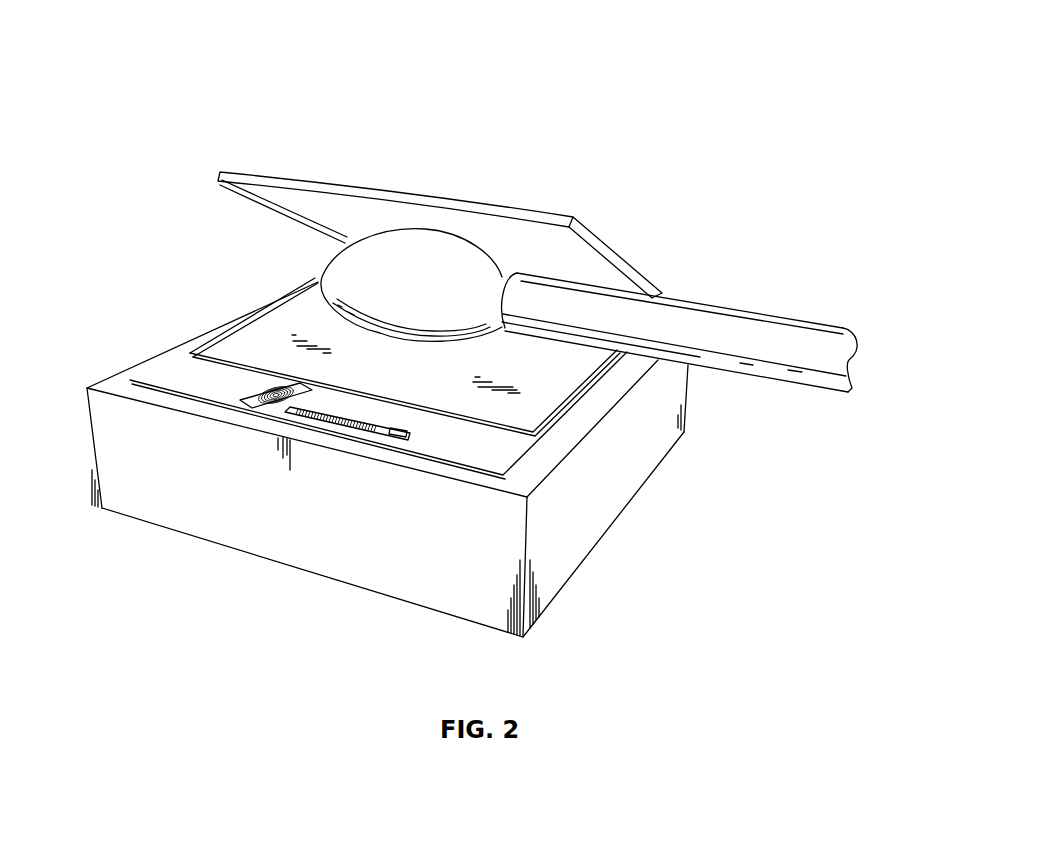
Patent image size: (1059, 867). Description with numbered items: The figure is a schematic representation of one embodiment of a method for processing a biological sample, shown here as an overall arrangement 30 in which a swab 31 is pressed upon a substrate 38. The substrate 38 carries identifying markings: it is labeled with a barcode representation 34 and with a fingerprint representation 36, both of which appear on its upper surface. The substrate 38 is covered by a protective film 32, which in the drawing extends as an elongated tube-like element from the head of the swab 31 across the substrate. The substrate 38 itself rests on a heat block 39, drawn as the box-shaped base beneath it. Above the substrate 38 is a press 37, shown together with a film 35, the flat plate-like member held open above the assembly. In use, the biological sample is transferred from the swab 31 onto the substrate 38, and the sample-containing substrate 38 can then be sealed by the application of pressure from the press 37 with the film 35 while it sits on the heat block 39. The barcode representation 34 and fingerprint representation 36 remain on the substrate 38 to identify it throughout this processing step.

The sample analysis device 30 is at (646, 114).
The swab 31 is at (473, 277).
The protective film 32 is at (518, 405).
The barcode representation 34 is at (345, 425).
The film 35 is at (330, 208).
The fingerprint representation 36 is at (253, 393).
The press 37 is at (620, 260).
The substrate 38 is at (183, 362).
The heat block 39 is at (533, 470).